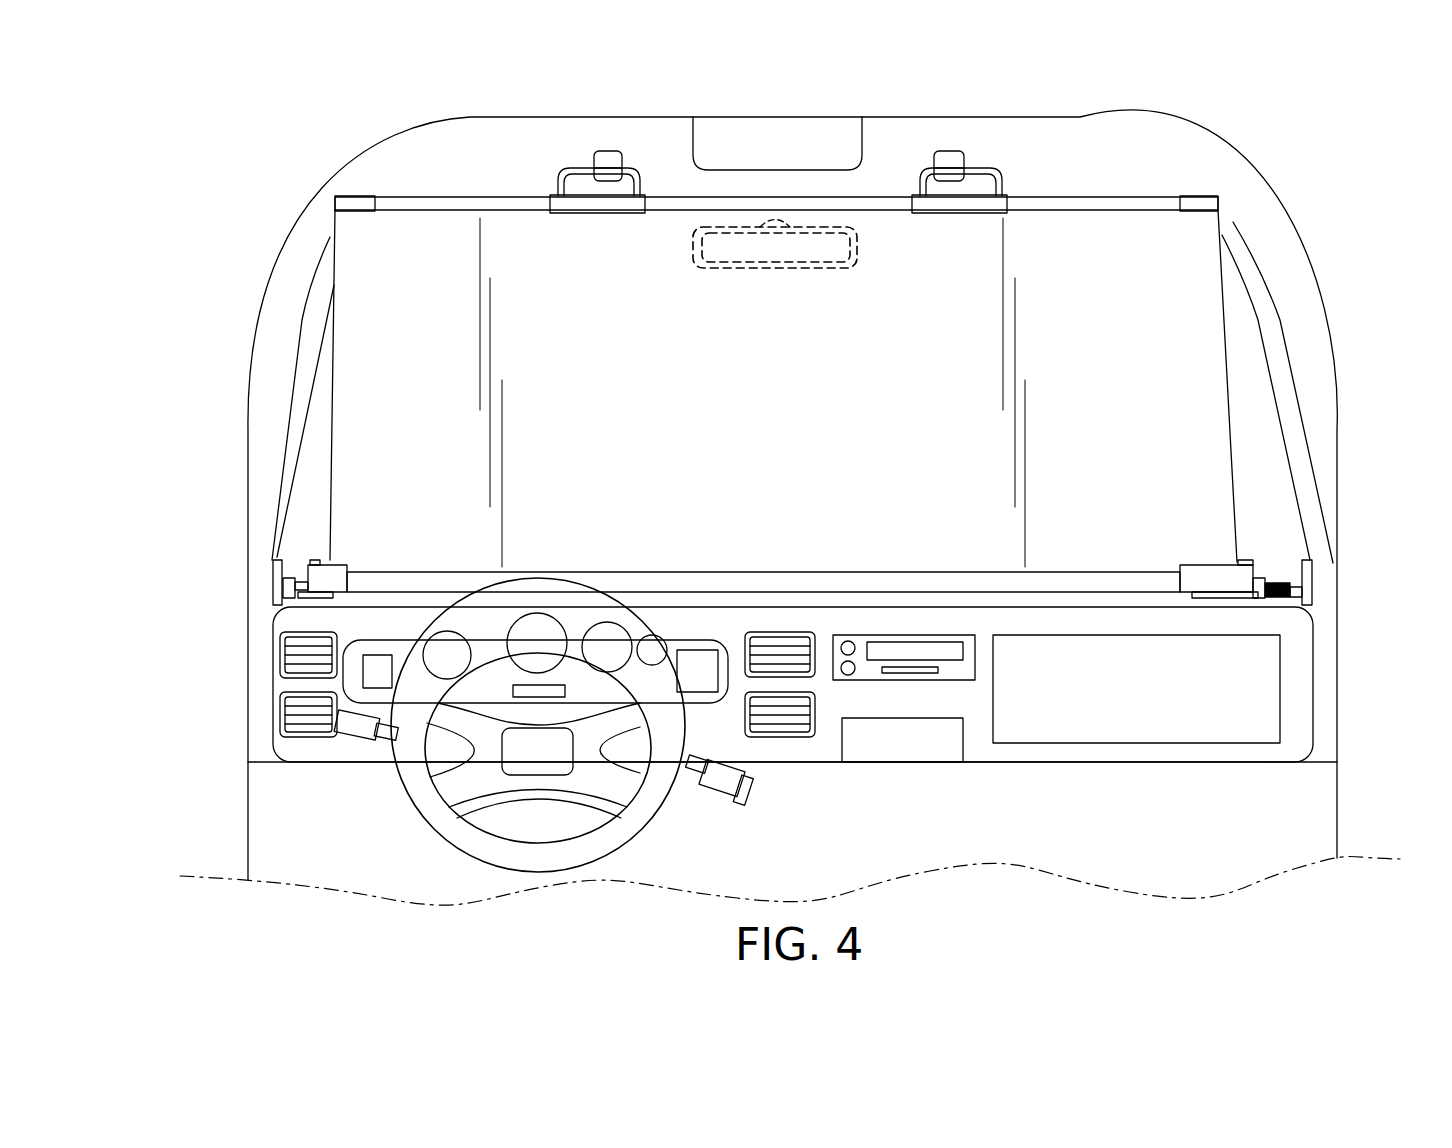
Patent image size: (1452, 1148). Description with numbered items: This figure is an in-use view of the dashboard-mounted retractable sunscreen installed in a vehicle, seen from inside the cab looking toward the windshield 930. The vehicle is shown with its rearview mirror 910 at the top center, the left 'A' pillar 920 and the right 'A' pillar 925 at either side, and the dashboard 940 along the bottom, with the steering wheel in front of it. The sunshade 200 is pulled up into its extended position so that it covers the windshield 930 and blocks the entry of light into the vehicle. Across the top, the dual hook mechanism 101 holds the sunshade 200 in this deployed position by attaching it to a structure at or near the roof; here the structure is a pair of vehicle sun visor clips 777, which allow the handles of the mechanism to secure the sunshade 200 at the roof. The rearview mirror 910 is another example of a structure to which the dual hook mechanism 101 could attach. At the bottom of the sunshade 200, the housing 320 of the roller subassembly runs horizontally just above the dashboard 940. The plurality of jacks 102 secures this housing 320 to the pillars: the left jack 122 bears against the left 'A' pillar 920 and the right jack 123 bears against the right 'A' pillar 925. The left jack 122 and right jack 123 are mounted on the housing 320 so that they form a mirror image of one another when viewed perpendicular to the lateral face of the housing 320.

The dual hook mechanism 101 is at (887, 207).
The plurality of jacks 102 is at (1263, 560).
The left jack 122 is at (278, 583).
The right jack 123 is at (1312, 577).
The sunshade 200 is at (1162, 298).
The housing 320 is at (847, 582).
The vehicle sun visor clip 777 is at (598, 162).
The rearview mirror 910 is at (807, 248).
The left 'A' pillar 920 is at (290, 436).
The right 'A' pillar 925 is at (1277, 338).
The windshield 930 is at (1268, 482).
The dashboard 940 is at (362, 604).